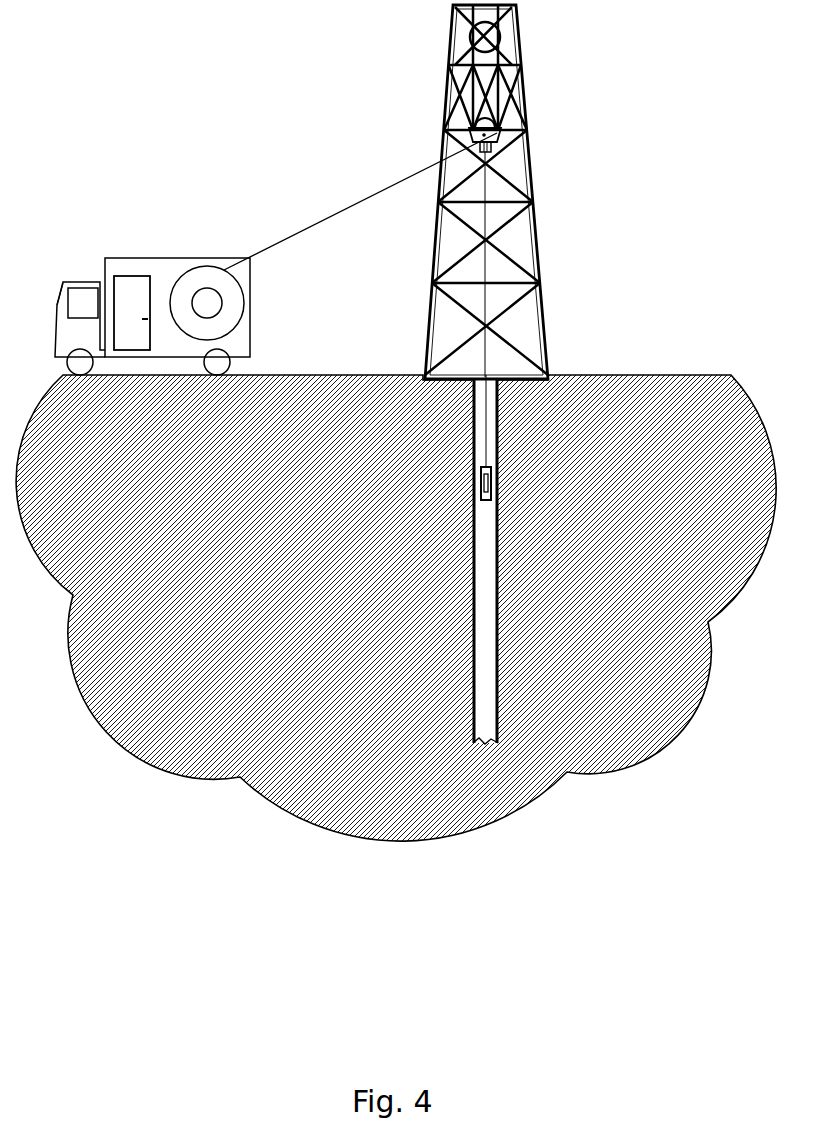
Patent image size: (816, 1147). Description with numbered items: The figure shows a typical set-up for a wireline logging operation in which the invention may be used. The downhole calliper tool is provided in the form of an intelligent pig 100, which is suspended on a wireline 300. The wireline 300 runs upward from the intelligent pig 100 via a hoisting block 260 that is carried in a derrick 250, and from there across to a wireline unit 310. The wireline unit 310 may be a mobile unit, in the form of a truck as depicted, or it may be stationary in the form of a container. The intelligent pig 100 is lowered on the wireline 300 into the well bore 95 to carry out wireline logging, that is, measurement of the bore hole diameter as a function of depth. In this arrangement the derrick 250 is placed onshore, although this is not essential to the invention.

The well bore 95 is at (478, 440).
The intelligent pig 100 is at (492, 485).
The derrick 250 is at (548, 266).
The hoisting block 260 is at (499, 134).
The wireline 300 is at (297, 228).
The wireline unit 310 is at (175, 257).